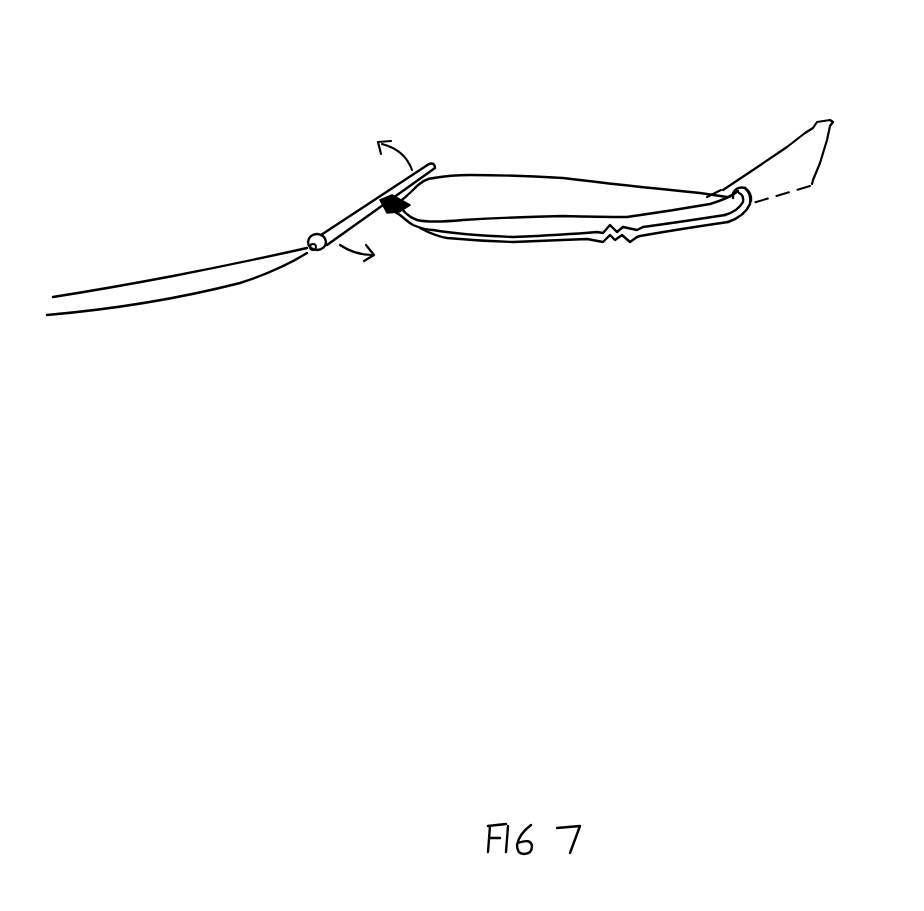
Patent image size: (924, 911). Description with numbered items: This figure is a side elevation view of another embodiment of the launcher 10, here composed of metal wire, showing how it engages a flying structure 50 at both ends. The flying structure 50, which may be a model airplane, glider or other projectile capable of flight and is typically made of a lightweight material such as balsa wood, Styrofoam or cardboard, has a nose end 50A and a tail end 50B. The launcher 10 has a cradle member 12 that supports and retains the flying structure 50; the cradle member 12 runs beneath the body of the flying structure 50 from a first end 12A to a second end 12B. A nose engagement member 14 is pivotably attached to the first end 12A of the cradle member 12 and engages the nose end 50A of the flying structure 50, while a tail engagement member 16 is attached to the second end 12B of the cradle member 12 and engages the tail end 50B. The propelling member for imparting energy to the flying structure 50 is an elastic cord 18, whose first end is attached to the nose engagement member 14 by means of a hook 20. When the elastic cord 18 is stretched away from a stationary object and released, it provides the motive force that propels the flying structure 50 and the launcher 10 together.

The launcher 10 is at (533, 258).
The cradle member 12 is at (590, 240).
The first end of cradle member 12A is at (307, 248).
The second end of cradle member 12B is at (735, 217).
The nose engagement member 14 is at (345, 200).
The tail engagement member 16 is at (750, 203).
The elastic cord 18 is at (160, 270).
The hook 20 is at (325, 260).
The flying structure 50 is at (580, 183).
The nose end 50A is at (405, 220).
The tail end 50B is at (827, 120).